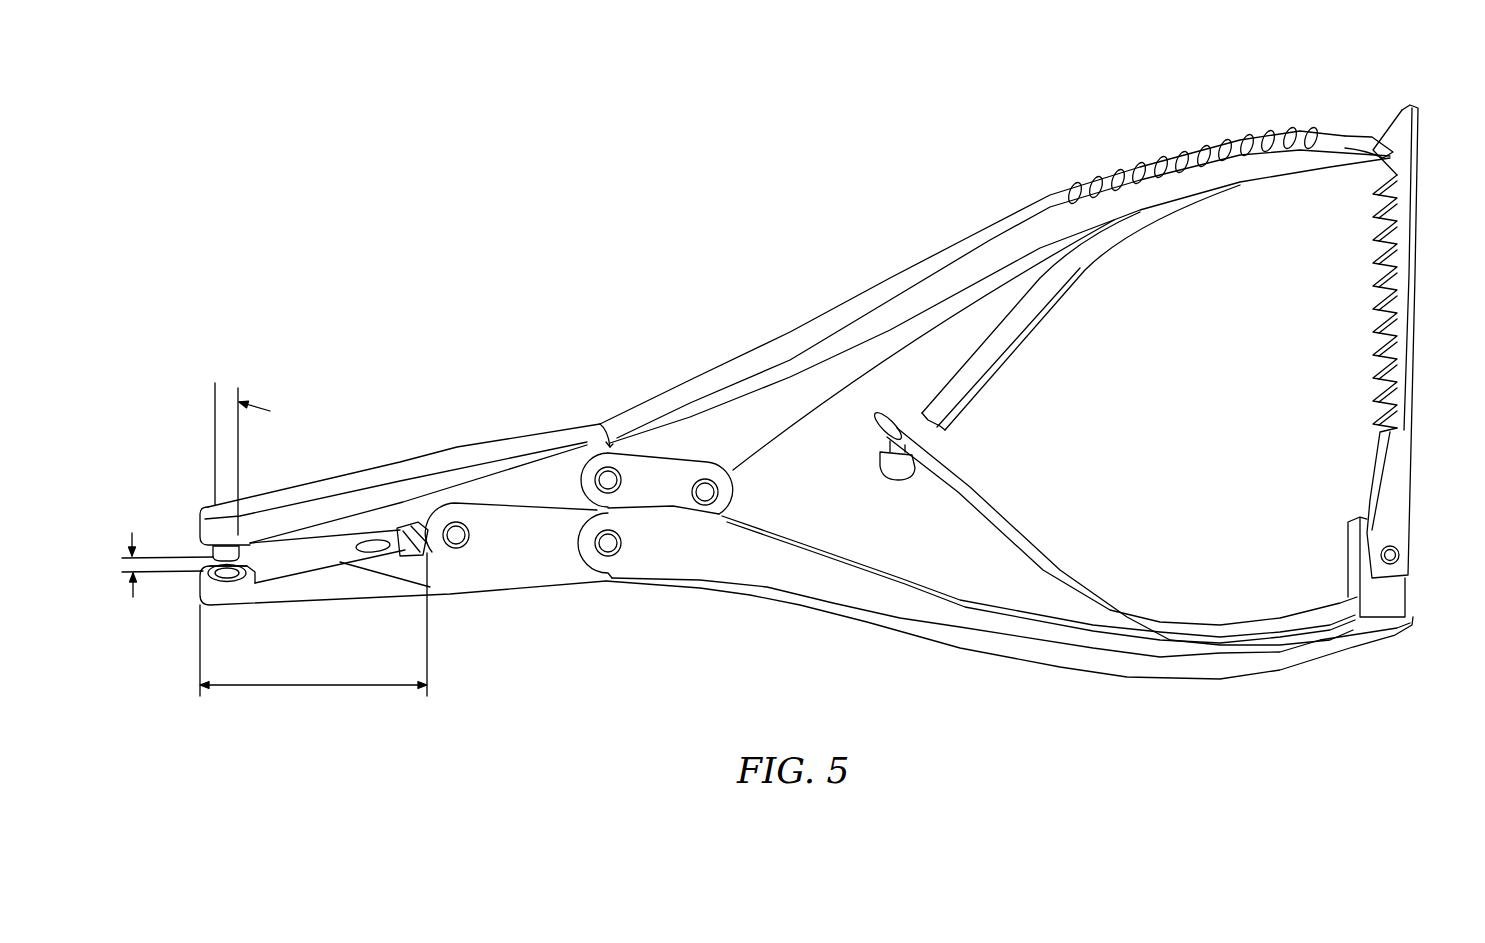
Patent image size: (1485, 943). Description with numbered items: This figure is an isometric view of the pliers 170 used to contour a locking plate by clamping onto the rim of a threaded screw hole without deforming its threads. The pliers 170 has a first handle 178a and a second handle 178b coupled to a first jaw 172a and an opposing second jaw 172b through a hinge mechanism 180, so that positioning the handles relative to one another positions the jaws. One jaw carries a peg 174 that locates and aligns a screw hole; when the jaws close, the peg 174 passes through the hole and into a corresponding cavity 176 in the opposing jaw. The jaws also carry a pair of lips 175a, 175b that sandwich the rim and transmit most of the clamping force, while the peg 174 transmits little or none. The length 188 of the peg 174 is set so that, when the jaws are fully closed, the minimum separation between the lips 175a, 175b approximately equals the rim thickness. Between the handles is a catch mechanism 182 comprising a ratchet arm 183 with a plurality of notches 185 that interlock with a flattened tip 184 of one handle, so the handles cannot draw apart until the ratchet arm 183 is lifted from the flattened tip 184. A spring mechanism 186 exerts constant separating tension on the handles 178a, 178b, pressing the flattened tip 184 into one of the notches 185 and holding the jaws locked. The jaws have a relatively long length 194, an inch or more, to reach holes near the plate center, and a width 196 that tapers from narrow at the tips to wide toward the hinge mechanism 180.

The pliers 170 is at (661, 226).
The jaw 172a is at (247, 504).
The jaw 172b is at (247, 606).
The peg 174 is at (300, 552).
The lip 175a is at (200, 540).
The lip 175b is at (203, 572).
The cavity 176 is at (228, 581).
The first handle 178a is at (1182, 131).
The second handle 178b is at (1182, 710).
The hinge mechanism 180 is at (574, 413).
The catch mechanism 182 is at (1378, 100).
The ratchet arm 183 is at (1410, 488).
The flattened tip 184 is at (1352, 140).
The notches 185 is at (1374, 342).
The spring mechanism 186 is at (954, 451).
The length of peg 188 is at (163, 549).
The length of jaws 194 is at (312, 698).
The width of jaws 196 is at (214, 386).